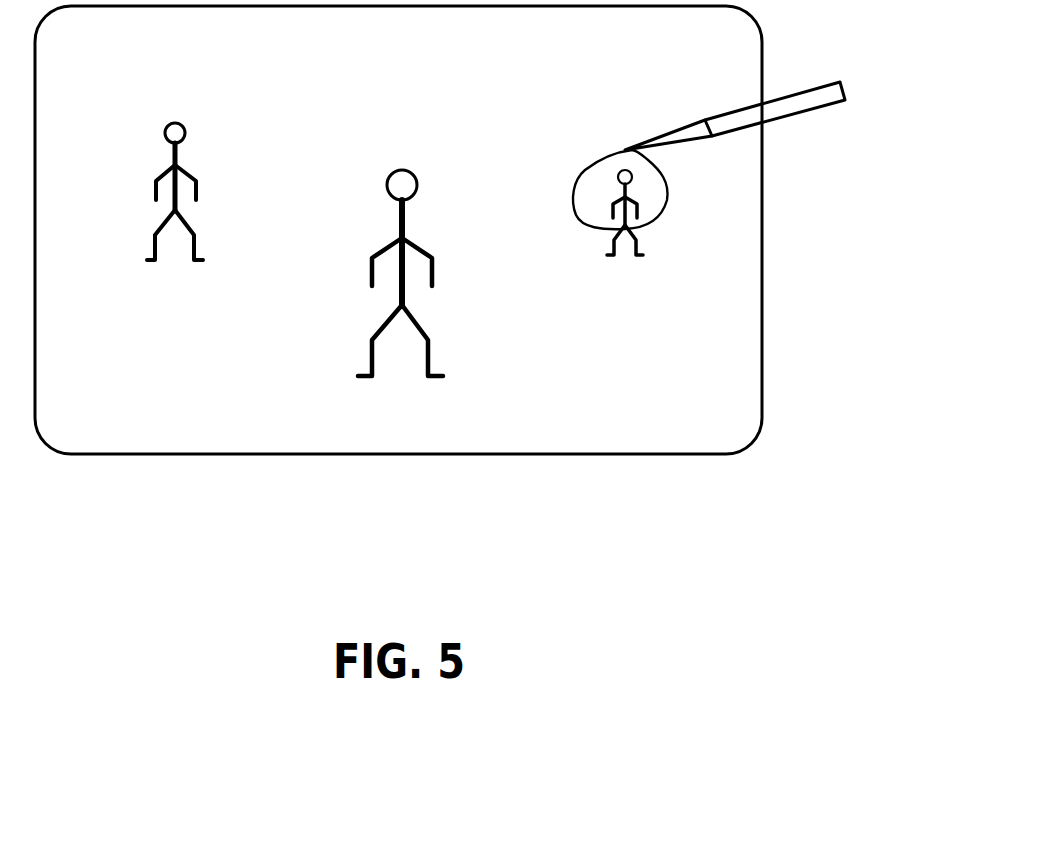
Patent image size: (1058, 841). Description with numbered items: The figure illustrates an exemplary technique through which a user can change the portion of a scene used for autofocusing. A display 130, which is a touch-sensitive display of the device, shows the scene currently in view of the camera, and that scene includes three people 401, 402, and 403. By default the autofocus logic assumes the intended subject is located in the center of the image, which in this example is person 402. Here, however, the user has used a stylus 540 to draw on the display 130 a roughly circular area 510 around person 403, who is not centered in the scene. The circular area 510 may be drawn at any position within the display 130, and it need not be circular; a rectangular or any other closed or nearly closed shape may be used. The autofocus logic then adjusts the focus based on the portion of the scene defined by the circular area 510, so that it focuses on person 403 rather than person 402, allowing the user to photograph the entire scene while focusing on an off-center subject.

The display 130 is at (762, 67).
The person 401 is at (197, 243).
The person 402 is at (429, 352).
The person 403 is at (640, 245).
The circular area 510 is at (583, 172).
The stylus 540 is at (845, 100).